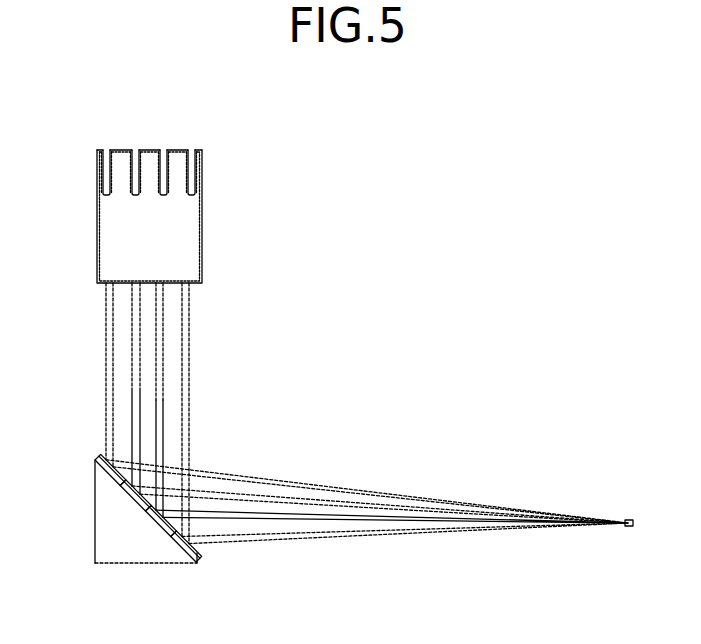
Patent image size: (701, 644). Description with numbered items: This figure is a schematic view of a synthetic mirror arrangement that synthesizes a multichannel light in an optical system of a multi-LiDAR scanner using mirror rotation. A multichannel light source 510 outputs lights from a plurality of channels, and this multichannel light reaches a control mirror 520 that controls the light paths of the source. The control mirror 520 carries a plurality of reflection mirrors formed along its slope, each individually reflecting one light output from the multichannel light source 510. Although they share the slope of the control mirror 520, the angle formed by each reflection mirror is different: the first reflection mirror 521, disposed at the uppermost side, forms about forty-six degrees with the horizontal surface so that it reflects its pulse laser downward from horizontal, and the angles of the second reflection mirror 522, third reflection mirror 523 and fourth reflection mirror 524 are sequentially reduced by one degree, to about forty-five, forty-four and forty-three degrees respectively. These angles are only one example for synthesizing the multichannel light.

The multichannel light source 510 is at (100, 226).
The control mirror 520 is at (100, 529).
The first reflection mirror 521 is at (97, 465).
The second reflection mirror 522 is at (124, 492).
The third reflection mirror 523 is at (167, 533).
The fourth reflection mirror 524 is at (191, 560).